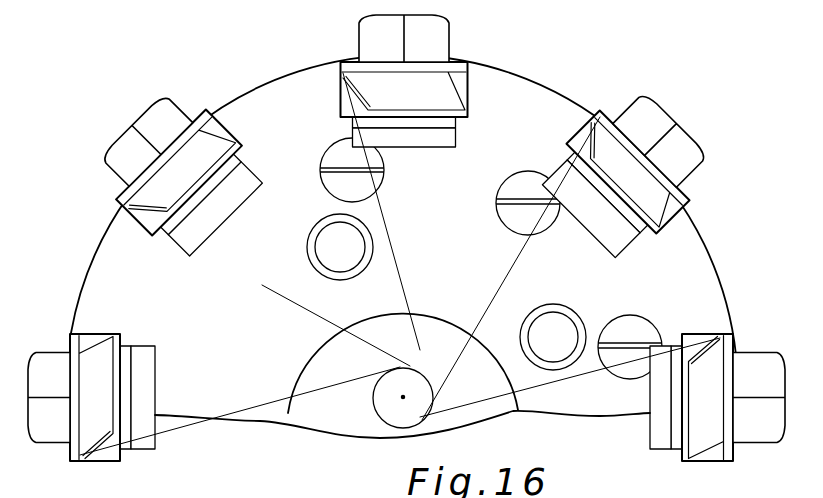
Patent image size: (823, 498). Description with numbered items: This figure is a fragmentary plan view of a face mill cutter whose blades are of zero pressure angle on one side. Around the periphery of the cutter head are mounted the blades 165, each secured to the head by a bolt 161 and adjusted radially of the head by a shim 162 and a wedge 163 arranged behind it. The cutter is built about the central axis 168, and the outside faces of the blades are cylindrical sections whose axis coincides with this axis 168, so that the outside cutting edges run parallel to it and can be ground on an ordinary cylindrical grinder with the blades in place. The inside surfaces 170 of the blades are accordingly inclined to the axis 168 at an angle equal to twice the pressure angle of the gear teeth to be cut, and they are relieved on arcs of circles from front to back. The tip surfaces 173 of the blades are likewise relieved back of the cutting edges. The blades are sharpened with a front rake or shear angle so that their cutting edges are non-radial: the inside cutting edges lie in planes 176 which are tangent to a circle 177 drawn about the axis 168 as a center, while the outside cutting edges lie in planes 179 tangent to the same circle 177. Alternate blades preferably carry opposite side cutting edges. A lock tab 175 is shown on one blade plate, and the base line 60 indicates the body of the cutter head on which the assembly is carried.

The base plate 60 is at (268, 416).
The bolts 161 is at (431, 32).
The shims 162 is at (440, 125).
The wedges 163 is at (445, 140).
The blades 165 is at (433, 99).
The axis of the cutter 168 is at (403, 396).
The inside surfaces of the cutting blades 170 is at (596, 152).
The tip surfaces 173 is at (662, 174).
The lock tab 175 is at (735, 416).
The planes 176 is at (282, 276).
The circle 177 is at (376, 413).
The planes 179 is at (387, 217).